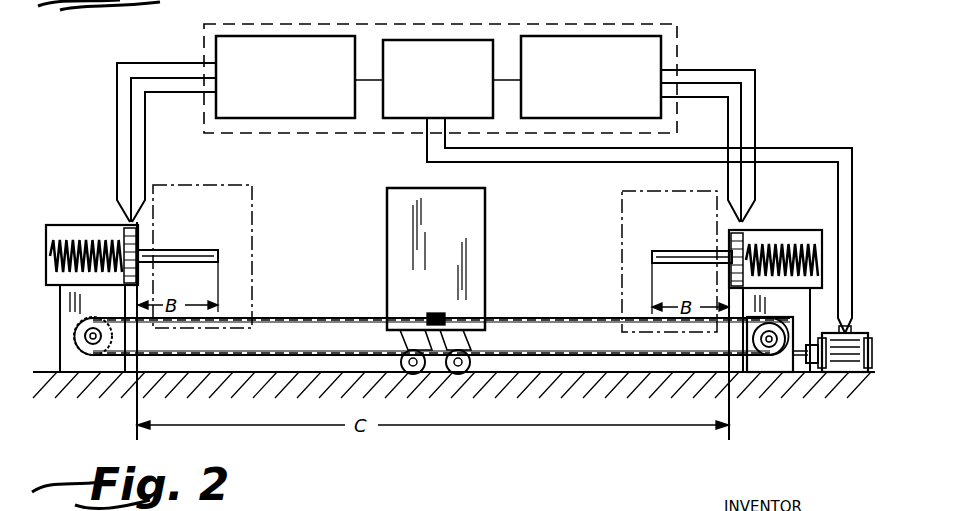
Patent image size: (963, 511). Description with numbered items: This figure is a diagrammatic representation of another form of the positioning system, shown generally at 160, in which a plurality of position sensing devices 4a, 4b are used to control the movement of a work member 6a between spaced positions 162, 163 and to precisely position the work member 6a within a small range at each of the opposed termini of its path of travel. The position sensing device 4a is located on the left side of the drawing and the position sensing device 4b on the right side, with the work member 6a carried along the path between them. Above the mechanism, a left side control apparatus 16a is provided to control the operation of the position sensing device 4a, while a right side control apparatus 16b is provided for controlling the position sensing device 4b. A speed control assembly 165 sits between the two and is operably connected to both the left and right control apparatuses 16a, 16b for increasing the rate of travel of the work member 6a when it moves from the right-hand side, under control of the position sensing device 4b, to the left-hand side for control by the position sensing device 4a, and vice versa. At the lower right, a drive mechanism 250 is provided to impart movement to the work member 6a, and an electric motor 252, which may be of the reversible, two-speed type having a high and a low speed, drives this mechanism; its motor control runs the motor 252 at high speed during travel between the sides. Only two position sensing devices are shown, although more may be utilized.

The positioning system 160 is at (733, 47).
The left side control apparatus 16a is at (216, 52).
The speed control assembly 165 is at (458, 8).
The right side control apparatus 16b is at (661, 50).
The position sensing device 4a is at (82, 232).
The position sensing device 4b is at (768, 235).
The spaced position 162 is at (252, 212).
The spaced position 163 is at (622, 232).
The work member 6a is at (478, 235).
The drive mechanism 250 is at (763, 374).
The electric motor 252 is at (845, 375).